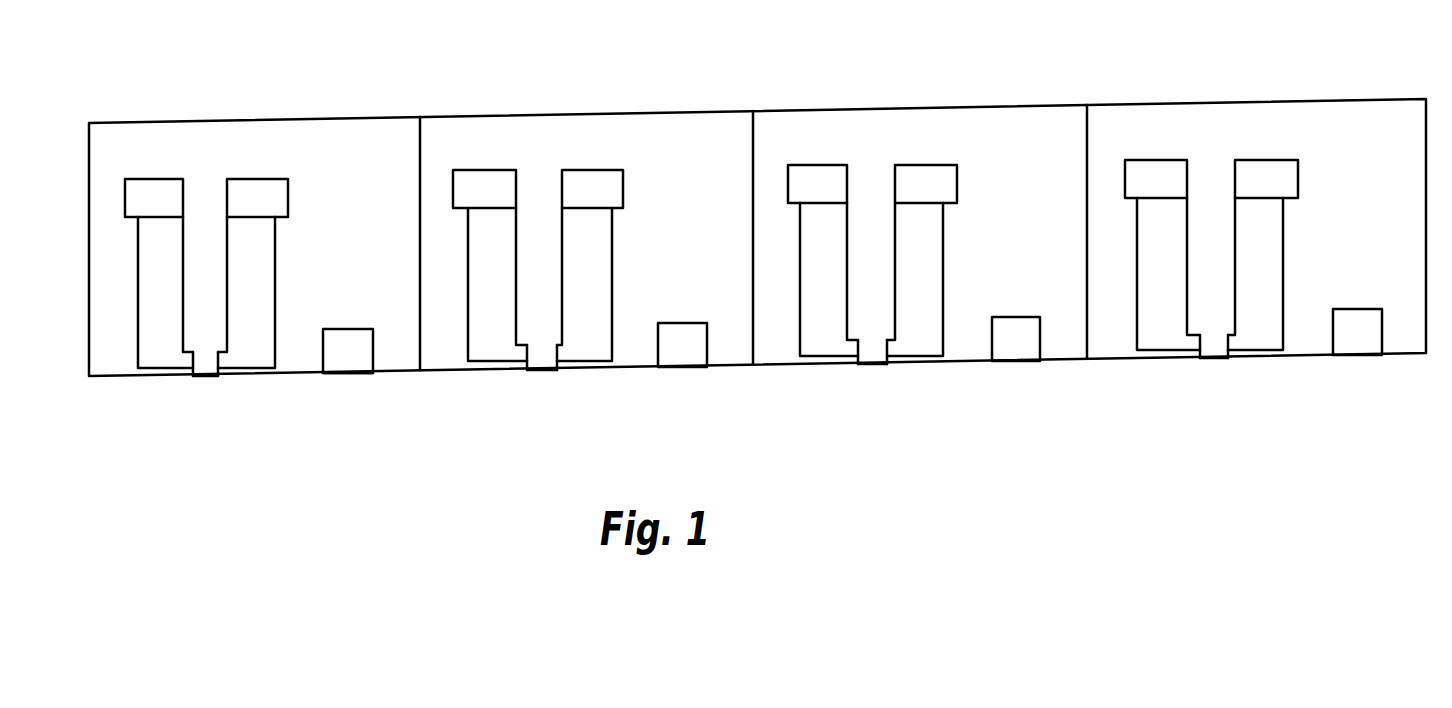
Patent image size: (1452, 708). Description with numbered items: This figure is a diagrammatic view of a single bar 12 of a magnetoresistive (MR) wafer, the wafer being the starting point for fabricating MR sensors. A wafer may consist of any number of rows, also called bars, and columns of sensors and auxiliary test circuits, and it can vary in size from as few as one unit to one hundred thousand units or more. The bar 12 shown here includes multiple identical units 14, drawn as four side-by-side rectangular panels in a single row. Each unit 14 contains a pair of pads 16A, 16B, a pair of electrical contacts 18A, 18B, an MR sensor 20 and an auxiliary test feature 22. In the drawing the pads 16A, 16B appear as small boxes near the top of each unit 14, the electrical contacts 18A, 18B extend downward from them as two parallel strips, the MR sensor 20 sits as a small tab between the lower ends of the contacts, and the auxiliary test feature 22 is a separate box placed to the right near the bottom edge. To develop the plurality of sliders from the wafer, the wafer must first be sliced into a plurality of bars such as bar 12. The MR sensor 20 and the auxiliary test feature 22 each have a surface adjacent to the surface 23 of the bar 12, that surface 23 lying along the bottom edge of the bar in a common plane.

The bar 12 is at (625, 110).
The unit 14 is at (806, 200).
The pad 16A is at (173, 210).
The pad 16B is at (275, 210).
The electrical contact 18A is at (172, 287).
The electrical contact 18B is at (260, 287).
The MR sensor 20 is at (208, 362).
The auxiliary test feature 22 is at (363, 363).
The surface 23 is at (203, 377).